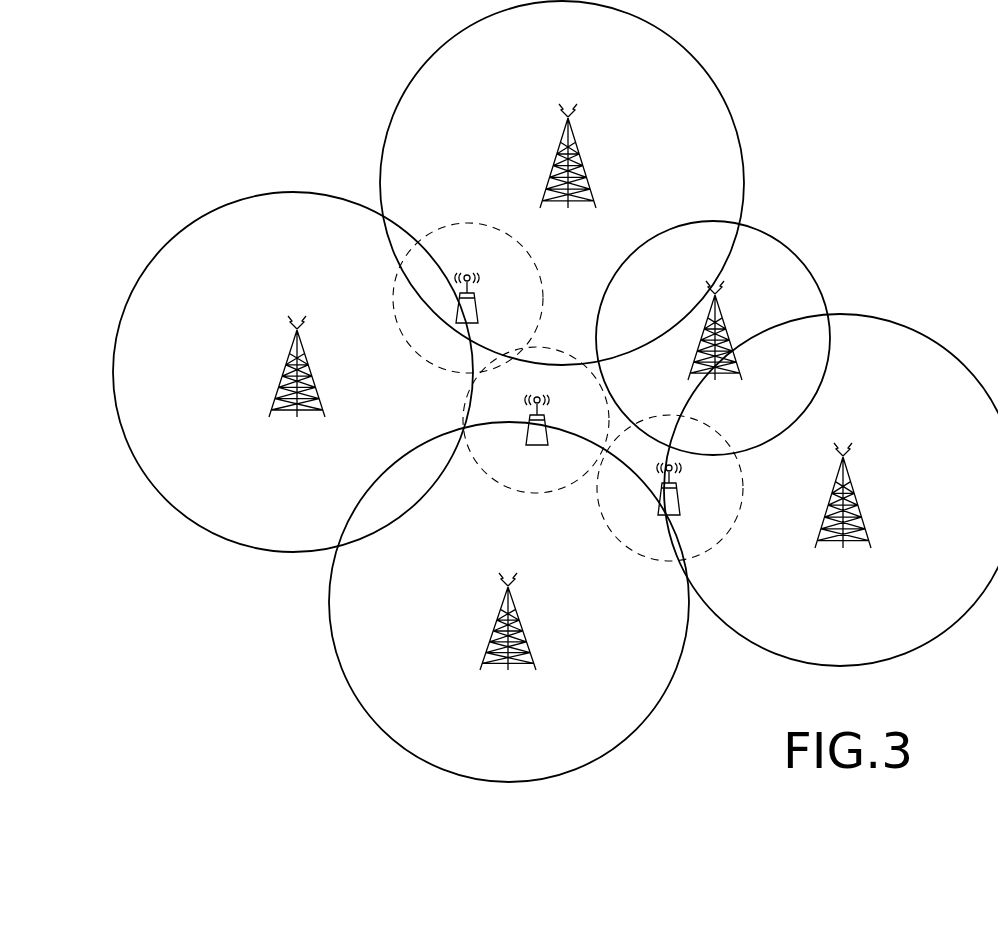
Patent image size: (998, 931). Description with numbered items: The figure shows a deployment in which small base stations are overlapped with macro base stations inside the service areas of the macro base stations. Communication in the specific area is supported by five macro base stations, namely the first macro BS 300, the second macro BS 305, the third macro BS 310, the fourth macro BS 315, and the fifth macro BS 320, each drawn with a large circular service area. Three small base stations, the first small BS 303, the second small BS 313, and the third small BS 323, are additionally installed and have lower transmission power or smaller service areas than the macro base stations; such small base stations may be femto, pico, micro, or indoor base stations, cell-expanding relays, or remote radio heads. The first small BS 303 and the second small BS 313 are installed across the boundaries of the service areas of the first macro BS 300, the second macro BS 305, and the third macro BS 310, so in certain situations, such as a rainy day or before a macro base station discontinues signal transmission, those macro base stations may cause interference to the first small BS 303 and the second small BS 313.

The macro BS 1 300 is at (308, 362).
The macro BS 2 305 is at (579, 155).
The macro BS 3 310 is at (519, 616).
The macro BS 4 315 is at (854, 491).
The macro BS 5 320 is at (726, 309).
The small BS 1 303 is at (478, 306).
The small BS 2 313 is at (548, 412).
The small BS 3 323 is at (680, 494).